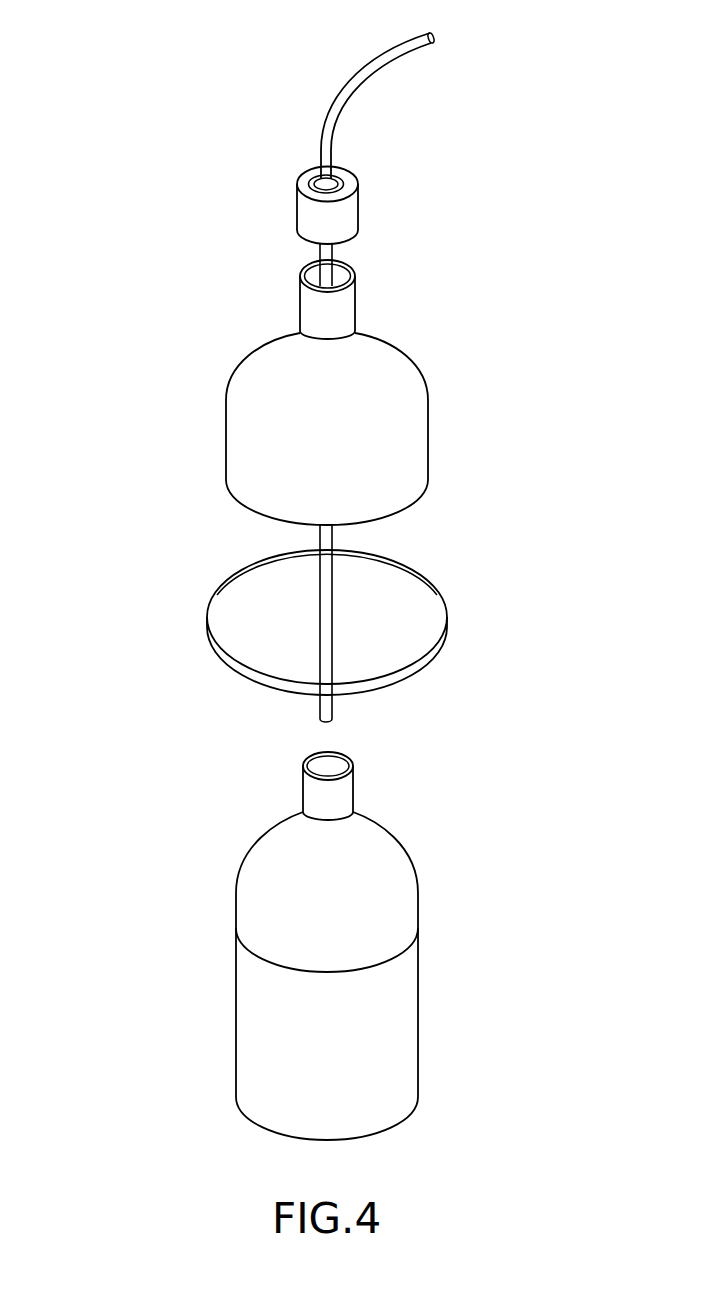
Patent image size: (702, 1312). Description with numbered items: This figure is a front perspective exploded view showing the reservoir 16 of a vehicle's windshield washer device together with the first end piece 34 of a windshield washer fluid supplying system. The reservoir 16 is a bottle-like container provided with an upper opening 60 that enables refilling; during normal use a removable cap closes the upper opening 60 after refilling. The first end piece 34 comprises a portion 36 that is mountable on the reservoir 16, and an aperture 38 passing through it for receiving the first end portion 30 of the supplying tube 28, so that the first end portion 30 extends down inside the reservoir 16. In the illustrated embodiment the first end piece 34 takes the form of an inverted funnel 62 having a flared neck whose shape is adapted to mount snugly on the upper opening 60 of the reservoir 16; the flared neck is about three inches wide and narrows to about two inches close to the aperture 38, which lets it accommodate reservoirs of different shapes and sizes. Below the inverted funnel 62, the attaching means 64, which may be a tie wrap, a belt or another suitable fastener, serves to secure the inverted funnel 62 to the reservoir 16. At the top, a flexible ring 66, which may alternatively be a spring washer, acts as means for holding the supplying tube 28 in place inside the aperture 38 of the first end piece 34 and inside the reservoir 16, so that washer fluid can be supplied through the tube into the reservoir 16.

The reservoir 16 is at (452, 1042).
The supplying tube 28 is at (348, 65).
The first end portion 30 is at (320, 663).
The first end piece 34 is at (98, 338).
The portion 36 is at (410, 472).
The aperture 38 is at (343, 277).
The upper opening 60 is at (333, 765).
The inverted funnel 62 is at (427, 398).
The attaching means 64 is at (437, 645).
The flexible ring 66 is at (350, 181).